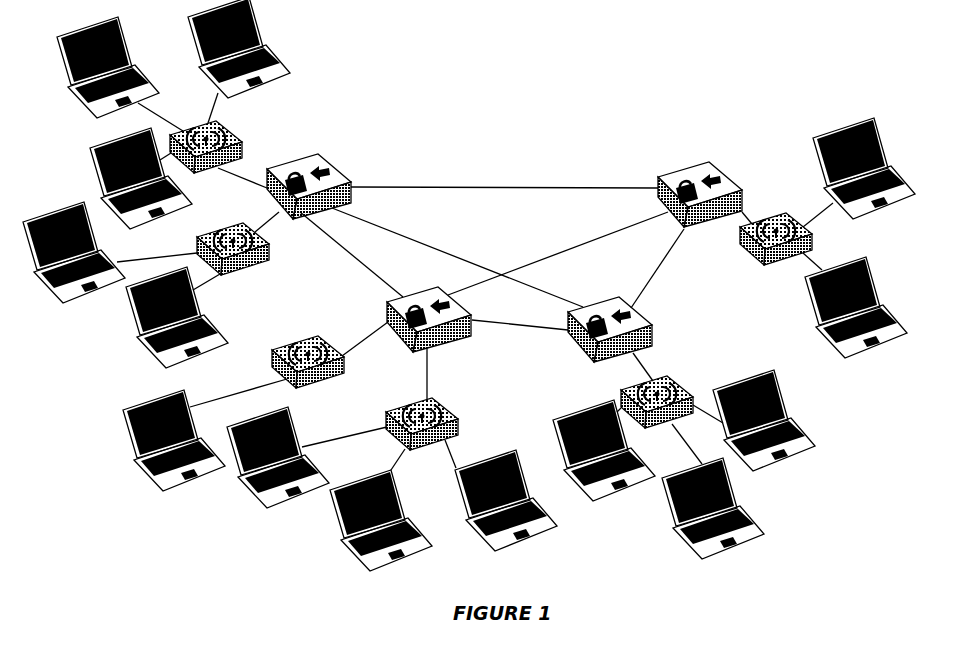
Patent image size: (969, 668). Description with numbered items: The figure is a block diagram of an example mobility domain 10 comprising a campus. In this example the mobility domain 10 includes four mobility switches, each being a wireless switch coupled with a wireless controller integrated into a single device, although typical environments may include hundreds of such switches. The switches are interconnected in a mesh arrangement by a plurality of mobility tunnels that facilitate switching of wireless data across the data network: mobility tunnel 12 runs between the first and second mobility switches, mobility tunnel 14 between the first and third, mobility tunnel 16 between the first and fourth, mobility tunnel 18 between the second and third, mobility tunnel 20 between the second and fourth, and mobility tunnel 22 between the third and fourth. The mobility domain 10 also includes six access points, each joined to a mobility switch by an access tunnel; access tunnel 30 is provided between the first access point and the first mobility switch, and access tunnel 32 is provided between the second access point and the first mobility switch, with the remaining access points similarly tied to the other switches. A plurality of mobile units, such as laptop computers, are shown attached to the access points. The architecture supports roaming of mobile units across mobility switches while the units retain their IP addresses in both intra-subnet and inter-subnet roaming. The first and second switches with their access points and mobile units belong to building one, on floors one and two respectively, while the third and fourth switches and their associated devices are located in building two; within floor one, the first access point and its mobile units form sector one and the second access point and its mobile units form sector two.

The mobility domain 10 is at (469, 84).
The mobility tunnel 12 is at (368, 269).
The mobility tunnel 14 is at (408, 239).
The mobility tunnel 16 is at (512, 187).
The mobility tunnel 18 is at (523, 326).
The mobility tunnel 20 is at (613, 232).
The mobility tunnel 22 is at (660, 267).
The access tunnel 30 is at (256, 179).
The access tunnel 32 is at (268, 220).